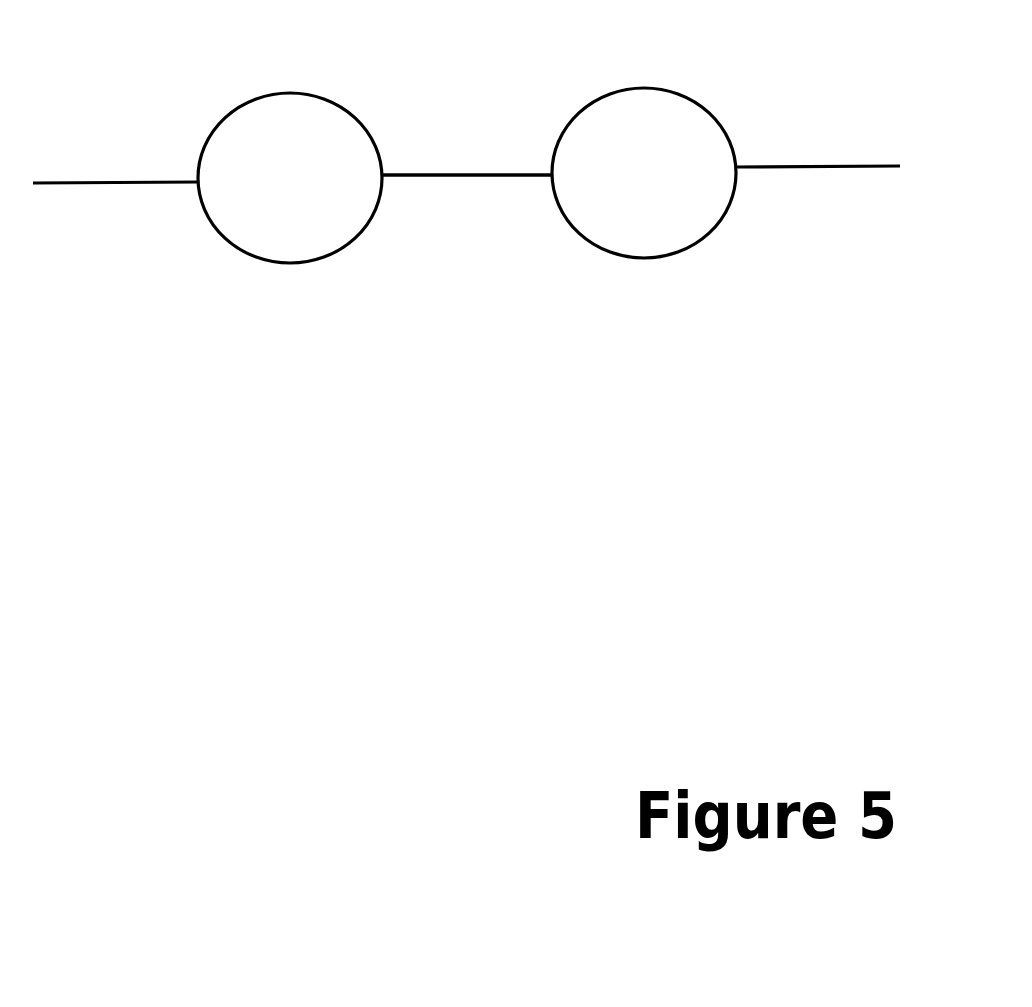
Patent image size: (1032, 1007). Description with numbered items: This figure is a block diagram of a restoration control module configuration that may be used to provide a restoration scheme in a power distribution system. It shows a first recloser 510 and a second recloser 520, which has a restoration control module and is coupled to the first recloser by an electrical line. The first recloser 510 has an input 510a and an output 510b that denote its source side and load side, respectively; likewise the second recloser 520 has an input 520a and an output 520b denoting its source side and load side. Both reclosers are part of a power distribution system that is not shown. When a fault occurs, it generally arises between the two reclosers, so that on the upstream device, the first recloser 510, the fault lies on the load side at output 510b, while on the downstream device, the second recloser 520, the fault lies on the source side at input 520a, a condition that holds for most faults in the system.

The first recloser 510 is at (287, 92).
The input of first recloser 510a is at (197, 184).
The output of first recloser 510b is at (385, 173).
The second recloser 520 is at (640, 86).
The input of second recloser 520a is at (552, 176).
The output of second recloser 520b is at (738, 167).